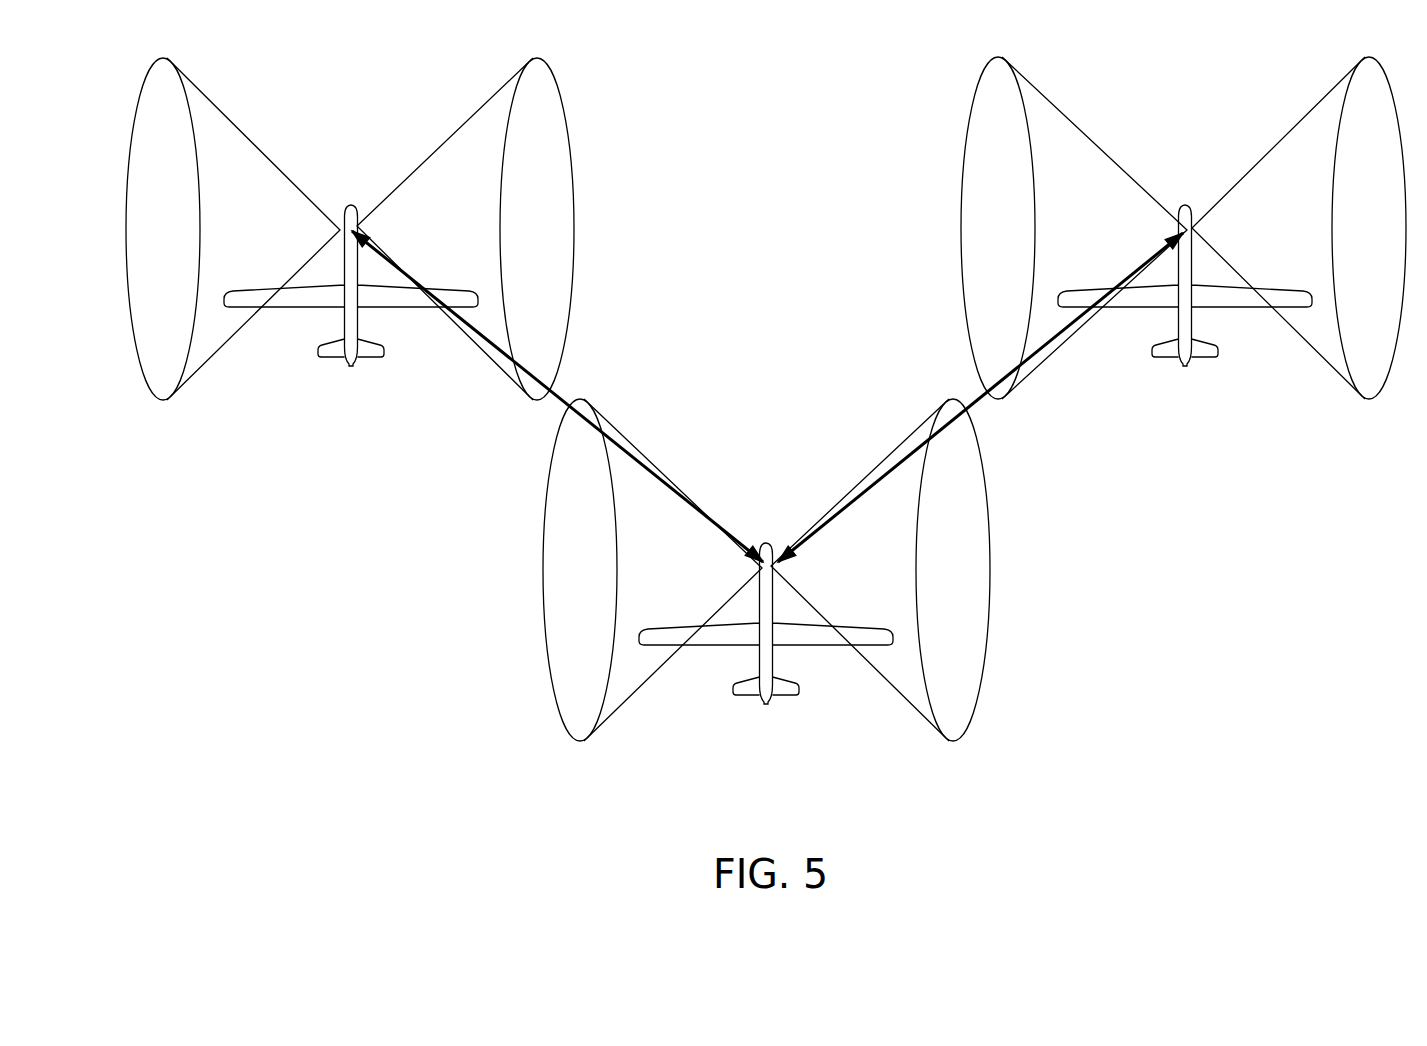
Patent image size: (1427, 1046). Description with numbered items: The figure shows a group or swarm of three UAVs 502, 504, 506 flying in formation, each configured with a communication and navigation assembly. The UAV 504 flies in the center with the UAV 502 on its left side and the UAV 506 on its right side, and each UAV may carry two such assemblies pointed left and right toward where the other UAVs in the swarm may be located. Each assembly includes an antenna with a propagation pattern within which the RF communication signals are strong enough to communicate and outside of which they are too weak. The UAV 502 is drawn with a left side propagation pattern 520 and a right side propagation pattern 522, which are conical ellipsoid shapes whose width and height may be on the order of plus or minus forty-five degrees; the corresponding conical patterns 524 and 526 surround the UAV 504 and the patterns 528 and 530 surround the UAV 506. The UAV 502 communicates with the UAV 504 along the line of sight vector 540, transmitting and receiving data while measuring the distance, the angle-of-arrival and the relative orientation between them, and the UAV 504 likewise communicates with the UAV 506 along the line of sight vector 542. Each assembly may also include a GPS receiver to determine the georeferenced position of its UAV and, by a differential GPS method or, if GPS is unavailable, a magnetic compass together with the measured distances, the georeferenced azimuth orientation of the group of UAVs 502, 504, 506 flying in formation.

The UAV 502 is at (352, 203).
The UAV 504 is at (765, 543).
The UAV 506 is at (1185, 203).
The propagation pattern 520 is at (208, 97).
The propagation pattern 522 is at (482, 102).
The antenna beam coverage of second aircraft (left) 524 is at (648, 673).
The antenna beam coverage of second aircraft (right) 526 is at (883, 682).
The antenna beam coverage of third aircraft (left) 528 is at (1040, 92).
The antenna beam coverage of third aircraft (right) 530 is at (1282, 133).
The line of sight vector 540 is at (557, 400).
The line of sight vector 542 is at (970, 403).